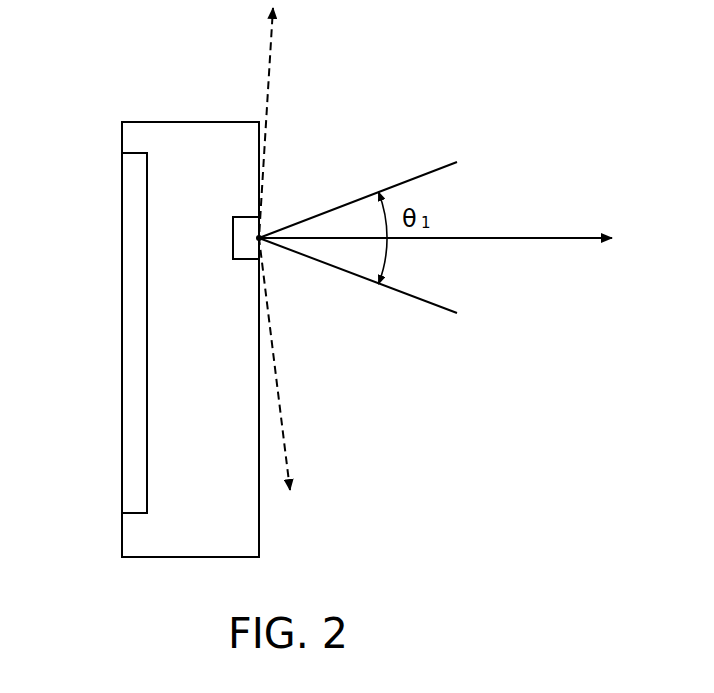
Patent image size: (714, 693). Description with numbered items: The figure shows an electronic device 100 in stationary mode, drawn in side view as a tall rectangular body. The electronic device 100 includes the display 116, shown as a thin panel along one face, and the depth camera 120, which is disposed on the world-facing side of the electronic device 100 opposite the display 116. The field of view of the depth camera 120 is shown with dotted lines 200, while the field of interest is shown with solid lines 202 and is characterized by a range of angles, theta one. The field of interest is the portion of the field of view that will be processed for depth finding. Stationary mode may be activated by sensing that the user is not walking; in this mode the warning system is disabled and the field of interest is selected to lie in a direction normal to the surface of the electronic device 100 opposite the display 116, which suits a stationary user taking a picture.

The electronic device 100 is at (158, 122).
The display 116 is at (135, 178).
The depth camera 120 is at (243, 260).
The dotted lines 200 is at (270, 82).
The solid lines 202 is at (425, 172).